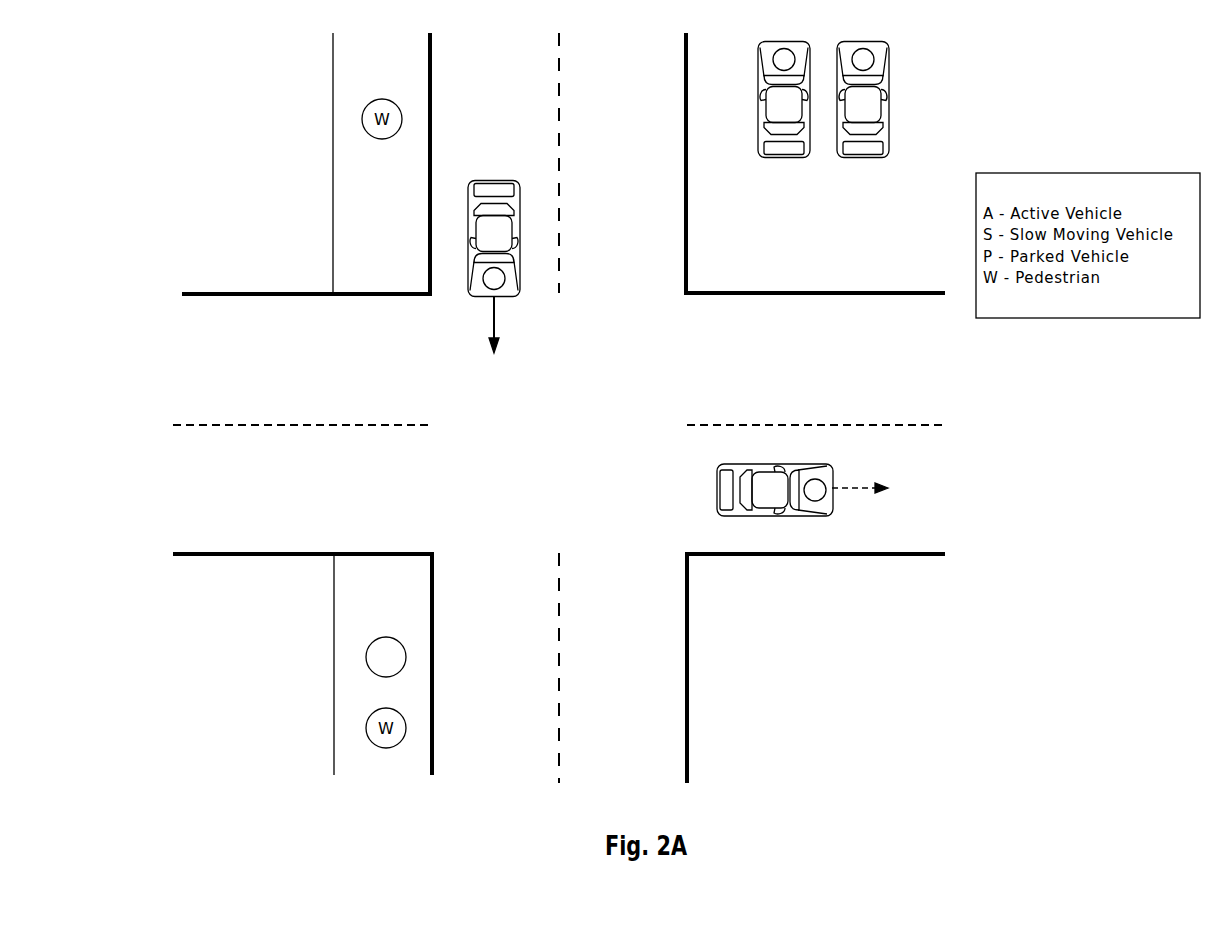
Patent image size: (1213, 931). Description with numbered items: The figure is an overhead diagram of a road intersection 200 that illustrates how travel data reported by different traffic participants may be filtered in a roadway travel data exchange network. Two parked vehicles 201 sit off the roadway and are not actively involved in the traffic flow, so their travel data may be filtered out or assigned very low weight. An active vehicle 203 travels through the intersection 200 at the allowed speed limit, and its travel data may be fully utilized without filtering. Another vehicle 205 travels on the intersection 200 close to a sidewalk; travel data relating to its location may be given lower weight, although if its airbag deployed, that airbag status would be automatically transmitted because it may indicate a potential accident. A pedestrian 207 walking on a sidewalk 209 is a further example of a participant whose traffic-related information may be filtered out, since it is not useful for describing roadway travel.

The road intersection 200 is at (228, 113).
The parked vehicles 201 is at (888, 48).
The active vehicle 203 is at (515, 228).
The slow moving vehicle 205 is at (767, 513).
The pedestrian 207 is at (405, 652).
The sidewalk 209 is at (333, 717).